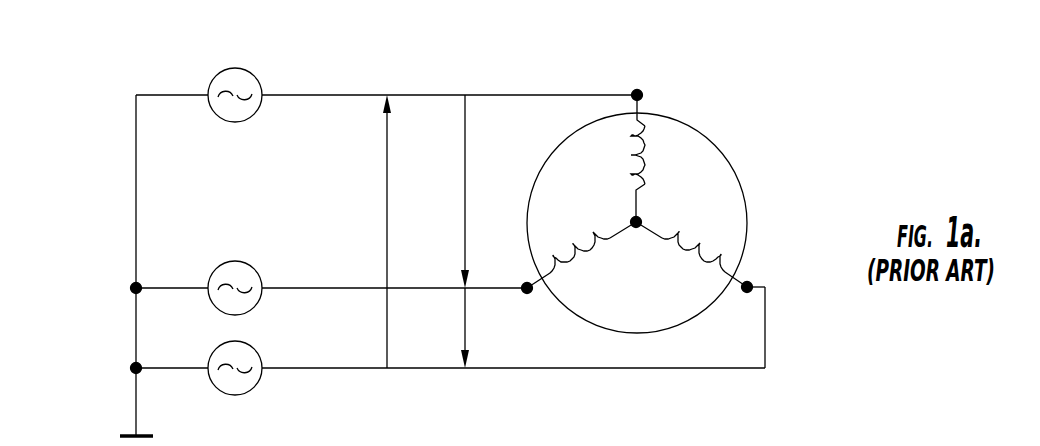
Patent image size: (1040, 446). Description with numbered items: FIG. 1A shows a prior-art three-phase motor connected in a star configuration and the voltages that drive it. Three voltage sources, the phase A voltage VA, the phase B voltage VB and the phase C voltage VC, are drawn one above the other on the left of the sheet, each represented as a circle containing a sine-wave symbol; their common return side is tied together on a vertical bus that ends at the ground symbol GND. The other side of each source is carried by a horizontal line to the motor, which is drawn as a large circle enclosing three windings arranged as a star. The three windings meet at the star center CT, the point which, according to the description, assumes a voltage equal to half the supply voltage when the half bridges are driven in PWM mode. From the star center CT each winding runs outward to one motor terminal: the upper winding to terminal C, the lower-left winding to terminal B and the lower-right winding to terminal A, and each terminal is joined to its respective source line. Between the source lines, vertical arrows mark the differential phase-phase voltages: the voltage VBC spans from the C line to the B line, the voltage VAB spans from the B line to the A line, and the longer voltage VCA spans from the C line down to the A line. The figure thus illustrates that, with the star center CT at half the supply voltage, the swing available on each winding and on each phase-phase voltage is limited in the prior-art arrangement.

The phase C drive voltage VC is at (235, 79).
The phase B drive voltage VB is at (235, 270).
The phase A drive voltage VA is at (235, 385).
The differential phase-phase voltage C-A VCA is at (368, 231).
The differential phase-phase voltage B-C VBC is at (447, 191).
The differential phase-phase voltage A-B VAB is at (447, 328).
The ground GND is at (116, 419).
The motor terminal C / phase C winding C is at (644, 151).
The star center CT is at (645, 210).
The motor terminal B / phase B winding B is at (579, 267).
The motor terminal A / phase A winding A is at (694, 267).